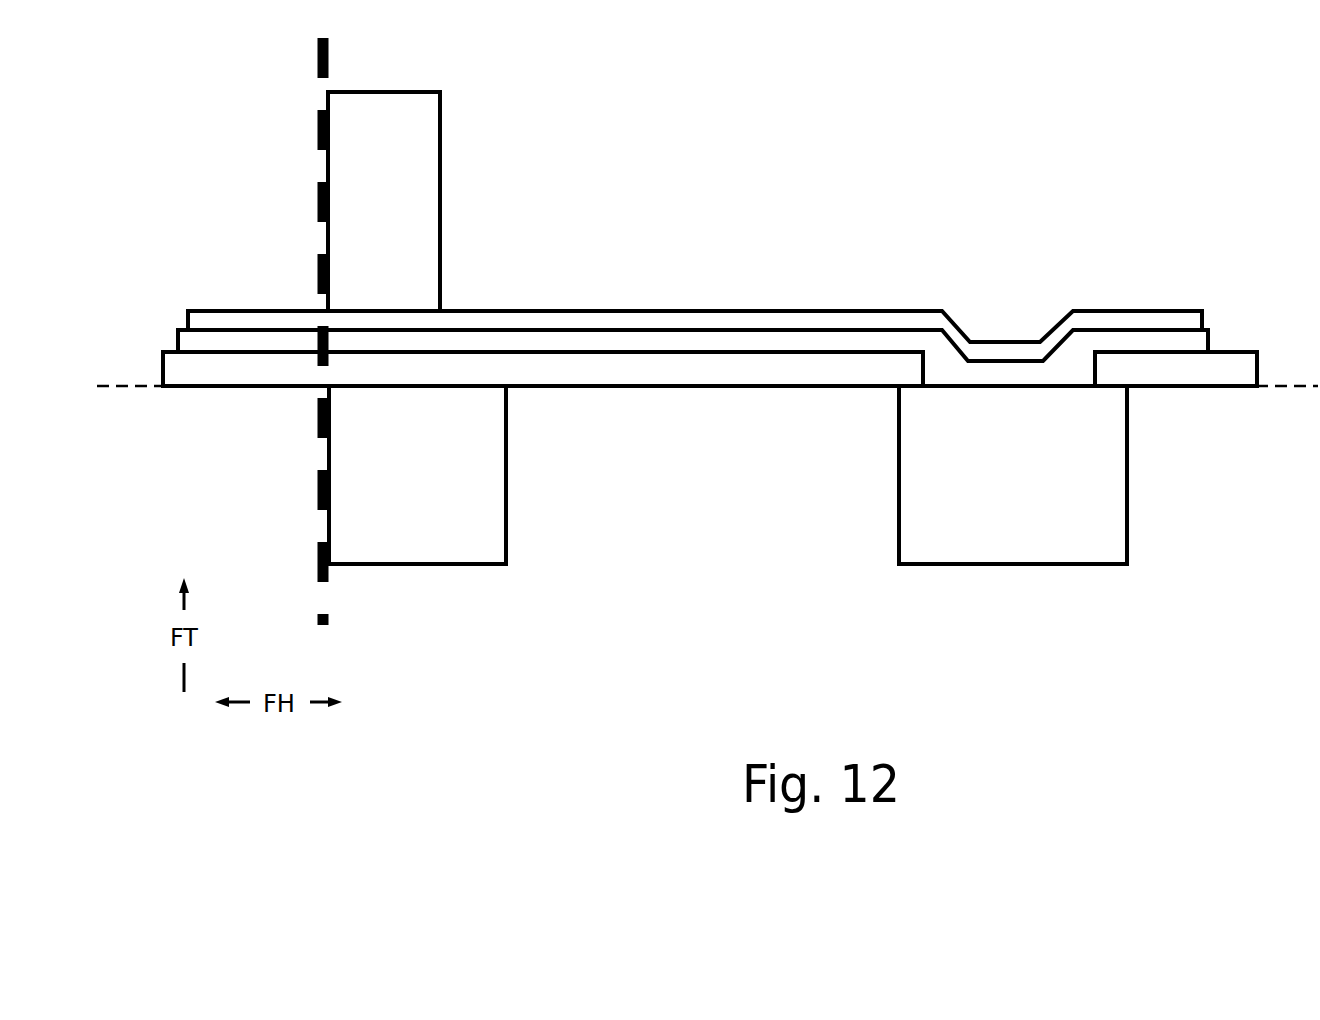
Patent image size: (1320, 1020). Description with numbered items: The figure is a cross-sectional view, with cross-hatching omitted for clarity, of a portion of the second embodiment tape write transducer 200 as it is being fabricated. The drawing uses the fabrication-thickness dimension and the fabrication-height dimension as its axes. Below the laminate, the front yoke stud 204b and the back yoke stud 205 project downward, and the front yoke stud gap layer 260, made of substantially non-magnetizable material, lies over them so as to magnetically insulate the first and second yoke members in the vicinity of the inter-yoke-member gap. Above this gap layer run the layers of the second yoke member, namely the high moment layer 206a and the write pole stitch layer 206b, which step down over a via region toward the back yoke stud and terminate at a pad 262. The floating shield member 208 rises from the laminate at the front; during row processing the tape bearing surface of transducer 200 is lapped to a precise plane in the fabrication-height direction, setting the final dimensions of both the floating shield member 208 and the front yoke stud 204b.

The tape write transducer 200 is at (1171, 103).
The front yoke stud 204b is at (428, 565).
The back yoke stud 205 is at (938, 563).
The high moment layer 206a is at (603, 308).
The write pole stitch layer 206b is at (818, 327).
The floating shield member 208 is at (441, 167).
The front yoke stud gap layer 260 is at (718, 387).
The contact pad 262 is at (1182, 388).